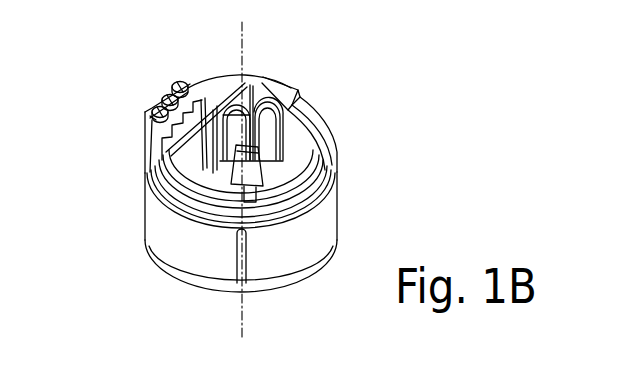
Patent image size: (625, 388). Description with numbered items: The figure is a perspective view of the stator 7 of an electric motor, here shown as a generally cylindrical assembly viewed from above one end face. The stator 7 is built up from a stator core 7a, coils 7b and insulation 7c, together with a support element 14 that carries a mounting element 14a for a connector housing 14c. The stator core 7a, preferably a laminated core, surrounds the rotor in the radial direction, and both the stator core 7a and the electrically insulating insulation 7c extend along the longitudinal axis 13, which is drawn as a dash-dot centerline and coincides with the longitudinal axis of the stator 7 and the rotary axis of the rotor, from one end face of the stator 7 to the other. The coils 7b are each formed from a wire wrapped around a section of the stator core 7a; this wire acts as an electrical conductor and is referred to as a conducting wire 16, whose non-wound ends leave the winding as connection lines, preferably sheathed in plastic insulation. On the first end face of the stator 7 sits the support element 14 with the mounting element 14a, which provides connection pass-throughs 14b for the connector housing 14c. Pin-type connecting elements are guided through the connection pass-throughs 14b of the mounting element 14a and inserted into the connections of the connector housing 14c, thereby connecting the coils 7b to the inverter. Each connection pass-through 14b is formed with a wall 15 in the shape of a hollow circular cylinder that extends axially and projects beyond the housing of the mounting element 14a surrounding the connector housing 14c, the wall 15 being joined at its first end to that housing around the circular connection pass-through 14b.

The stator 7 is at (357, 63).
The stator core 7a is at (262, 83).
The coils 7b is at (230, 107).
The insulation 7c is at (213, 100).
The longitudinal axis 13 is at (243, 304).
The support element 14 is at (208, 219).
The mounting element 14a is at (160, 58).
The connection pass-through 14b is at (180, 82).
The connector housing 14c is at (160, 156).
The wall 15 is at (152, 113).
The conducting wire 16 is at (176, 178).